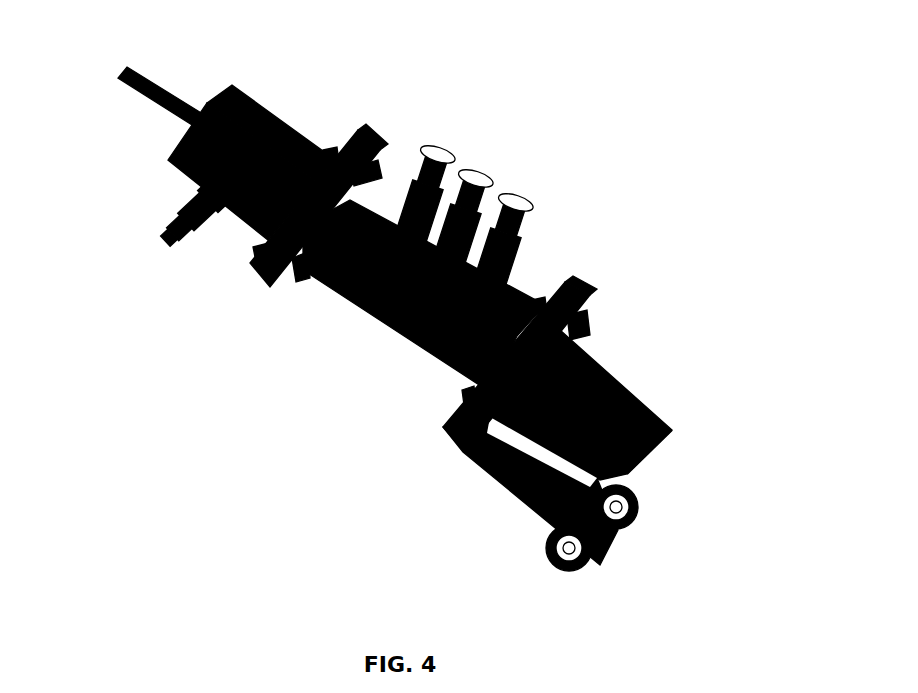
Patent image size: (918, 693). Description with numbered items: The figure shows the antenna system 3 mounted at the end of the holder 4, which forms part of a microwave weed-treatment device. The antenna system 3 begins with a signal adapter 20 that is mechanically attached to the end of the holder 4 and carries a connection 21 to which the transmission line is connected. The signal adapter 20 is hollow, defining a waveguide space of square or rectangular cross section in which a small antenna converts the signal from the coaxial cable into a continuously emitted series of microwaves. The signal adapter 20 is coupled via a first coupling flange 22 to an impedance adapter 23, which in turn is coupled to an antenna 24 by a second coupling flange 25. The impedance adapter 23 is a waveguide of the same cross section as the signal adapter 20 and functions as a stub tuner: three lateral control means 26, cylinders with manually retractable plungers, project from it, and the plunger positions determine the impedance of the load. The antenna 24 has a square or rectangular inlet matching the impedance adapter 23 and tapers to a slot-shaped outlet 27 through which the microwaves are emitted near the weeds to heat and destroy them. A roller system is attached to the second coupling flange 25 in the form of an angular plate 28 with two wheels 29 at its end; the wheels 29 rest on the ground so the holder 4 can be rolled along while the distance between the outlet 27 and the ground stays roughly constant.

The antenna system 3 is at (423, 311).
The holder 4 is at (150, 92).
The signal adapter 20 is at (245, 222).
The connection 21 is at (175, 220).
The first coupling flange 22 is at (367, 145).
The impedance adapter 23 is at (393, 332).
The antenna 24 is at (613, 363).
The second coupling flange 25 is at (557, 302).
The lateral control means 26 is at (512, 162).
The slot-shaped outlet 27 is at (662, 447).
The angular plate 28 is at (538, 515).
The wheels 29 is at (639, 528).